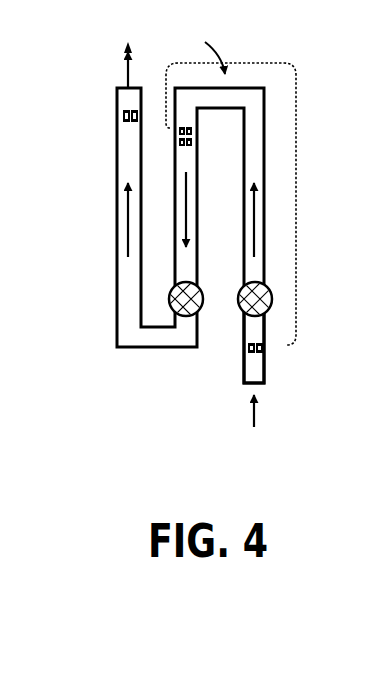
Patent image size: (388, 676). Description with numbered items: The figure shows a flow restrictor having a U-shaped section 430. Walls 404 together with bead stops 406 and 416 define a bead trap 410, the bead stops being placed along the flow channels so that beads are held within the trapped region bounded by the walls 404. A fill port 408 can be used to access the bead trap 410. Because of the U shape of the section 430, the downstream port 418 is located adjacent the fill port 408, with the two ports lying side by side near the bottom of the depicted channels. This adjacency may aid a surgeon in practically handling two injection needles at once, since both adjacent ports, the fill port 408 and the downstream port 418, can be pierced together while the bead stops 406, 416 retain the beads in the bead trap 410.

The walls 404 is at (265, 372).
The bead stop 406 is at (266, 348).
The fill port 408 is at (246, 313).
The bead trap 410 is at (297, 105).
The bead stop 416 is at (177, 142).
The downstream port 418 is at (203, 291).
The U-shaped section 430 is at (197, 54).